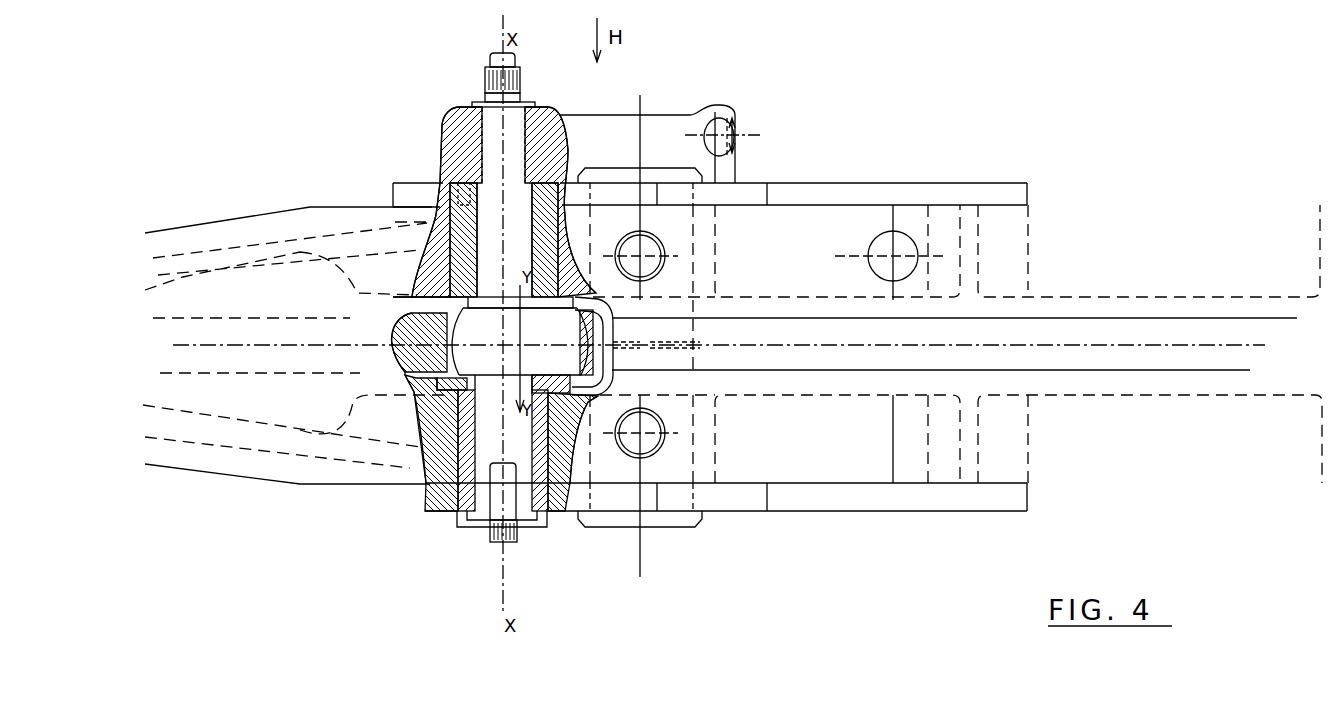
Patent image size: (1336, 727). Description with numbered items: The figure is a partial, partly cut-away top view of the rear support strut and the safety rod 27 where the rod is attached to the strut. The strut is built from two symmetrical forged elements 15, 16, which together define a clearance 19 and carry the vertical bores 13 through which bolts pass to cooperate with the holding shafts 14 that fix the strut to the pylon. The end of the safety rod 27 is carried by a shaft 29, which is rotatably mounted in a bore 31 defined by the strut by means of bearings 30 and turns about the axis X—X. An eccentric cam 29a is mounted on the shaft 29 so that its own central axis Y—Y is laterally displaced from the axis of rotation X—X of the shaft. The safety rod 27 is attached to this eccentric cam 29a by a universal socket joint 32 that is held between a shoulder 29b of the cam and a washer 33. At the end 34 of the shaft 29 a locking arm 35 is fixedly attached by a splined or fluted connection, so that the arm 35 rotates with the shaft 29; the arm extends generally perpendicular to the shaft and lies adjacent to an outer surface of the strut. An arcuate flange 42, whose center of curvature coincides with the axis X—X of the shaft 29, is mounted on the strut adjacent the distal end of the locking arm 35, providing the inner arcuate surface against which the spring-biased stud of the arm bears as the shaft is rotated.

The vertical bores 13 is at (663, 445).
The holding shafts 14 is at (675, 527).
The forged element 15 is at (1176, 281).
The forged element 16 is at (1176, 451).
The clearance 19 is at (413, 395).
The safety rod 27 is at (225, 365).
The shaft 29 is at (487, 487).
The eccentric cam 29a is at (536, 520).
The shoulder 29b is at (480, 298).
The bearings 30 is at (462, 232).
The bore 31 is at (545, 395).
The universal socket joint 32 is at (448, 385).
The washer 33 is at (568, 402).
The end of shaft 34 is at (458, 131).
The locking arm 35 is at (540, 128).
The arcuate flange 42 is at (657, 130).